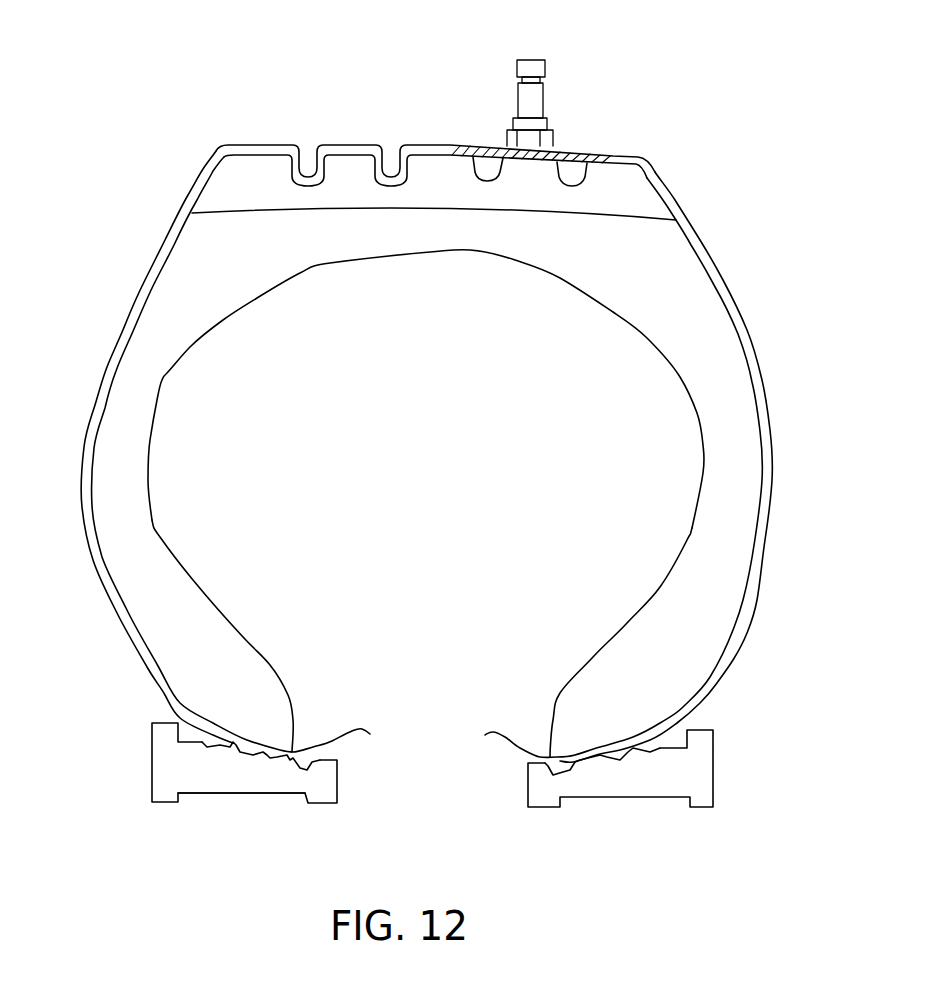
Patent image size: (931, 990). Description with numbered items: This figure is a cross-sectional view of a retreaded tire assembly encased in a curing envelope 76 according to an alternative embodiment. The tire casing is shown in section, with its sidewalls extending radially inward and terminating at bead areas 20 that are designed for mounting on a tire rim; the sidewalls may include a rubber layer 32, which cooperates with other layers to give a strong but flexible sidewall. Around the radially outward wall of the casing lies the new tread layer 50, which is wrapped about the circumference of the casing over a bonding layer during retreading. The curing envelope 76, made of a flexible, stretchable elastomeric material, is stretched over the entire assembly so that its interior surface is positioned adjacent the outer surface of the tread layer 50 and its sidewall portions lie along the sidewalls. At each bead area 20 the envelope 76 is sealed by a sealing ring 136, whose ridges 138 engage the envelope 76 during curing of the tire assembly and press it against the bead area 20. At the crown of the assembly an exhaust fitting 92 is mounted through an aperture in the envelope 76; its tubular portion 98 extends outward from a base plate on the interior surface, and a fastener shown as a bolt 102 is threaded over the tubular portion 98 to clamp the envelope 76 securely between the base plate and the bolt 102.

The bead area 20 is at (240, 653).
The rubber layer 32 is at (130, 443).
The tread layer 50 is at (427, 197).
The curing envelope 76 is at (163, 243).
The exhaust fitting 92 is at (542, 73).
The tubular portion 98 is at (515, 103).
The bolt 102 is at (553, 143).
The sealing ring 136 is at (150, 752).
The ridges 138 is at (690, 897).